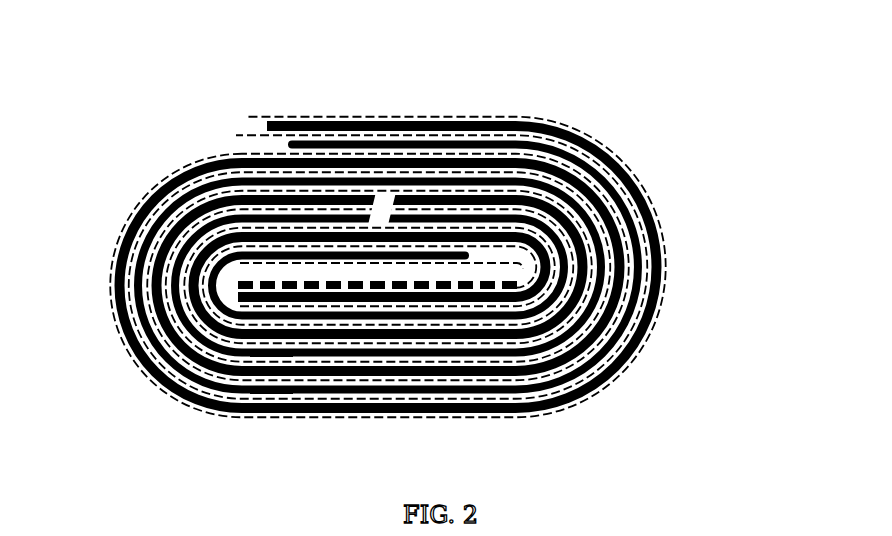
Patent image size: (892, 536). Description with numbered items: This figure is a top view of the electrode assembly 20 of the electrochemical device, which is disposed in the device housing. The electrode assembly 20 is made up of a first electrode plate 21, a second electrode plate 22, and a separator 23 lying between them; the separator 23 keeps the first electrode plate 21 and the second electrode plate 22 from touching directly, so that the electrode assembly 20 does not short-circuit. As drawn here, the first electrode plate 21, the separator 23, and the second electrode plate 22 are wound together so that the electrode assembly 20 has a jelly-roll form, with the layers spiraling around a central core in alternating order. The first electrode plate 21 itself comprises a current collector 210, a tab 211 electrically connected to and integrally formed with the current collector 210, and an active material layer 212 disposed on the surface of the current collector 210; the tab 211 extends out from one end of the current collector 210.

The electrode assembly 20 is at (438, 224).
The first electrode plate 21 is at (442, 267).
The current collector 210 is at (657, 227).
The tab 211 is at (293, 347).
The active material layer 212 is at (650, 207).
The second electrode plate 22 is at (640, 345).
The separator 23 is at (657, 285).